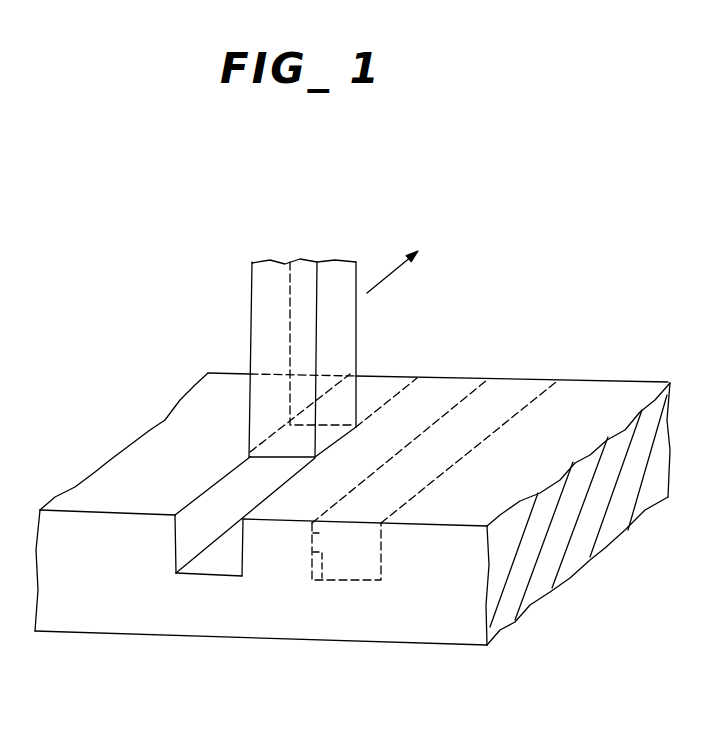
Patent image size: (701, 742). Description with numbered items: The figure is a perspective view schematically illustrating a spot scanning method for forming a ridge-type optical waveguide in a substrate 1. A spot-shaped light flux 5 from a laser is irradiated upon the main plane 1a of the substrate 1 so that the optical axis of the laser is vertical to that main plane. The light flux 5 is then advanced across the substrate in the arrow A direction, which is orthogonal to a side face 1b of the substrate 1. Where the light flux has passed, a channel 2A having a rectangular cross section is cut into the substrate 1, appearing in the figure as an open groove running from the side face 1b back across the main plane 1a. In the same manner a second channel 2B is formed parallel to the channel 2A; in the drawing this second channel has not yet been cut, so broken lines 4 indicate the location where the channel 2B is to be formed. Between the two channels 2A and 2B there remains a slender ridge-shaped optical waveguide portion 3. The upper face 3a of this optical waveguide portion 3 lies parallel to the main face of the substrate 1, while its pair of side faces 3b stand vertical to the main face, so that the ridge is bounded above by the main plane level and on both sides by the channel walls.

The substrate 1 is at (627, 393).
The main plane of the substrate 1a is at (585, 393).
The side face of the substrate 1b is at (140, 617).
The channel 2A is at (212, 500).
The channel 2B is at (510, 393).
The optical waveguide portion 3 is at (447, 390).
The upper face of the optical waveguide 3a is at (418, 390).
The side faces of the optical waveguide 3b is at (241, 547).
The broken lines 4 is at (390, 397).
The spot-forming light flux 5 is at (252, 305).
The arrow direction A is at (392, 276).